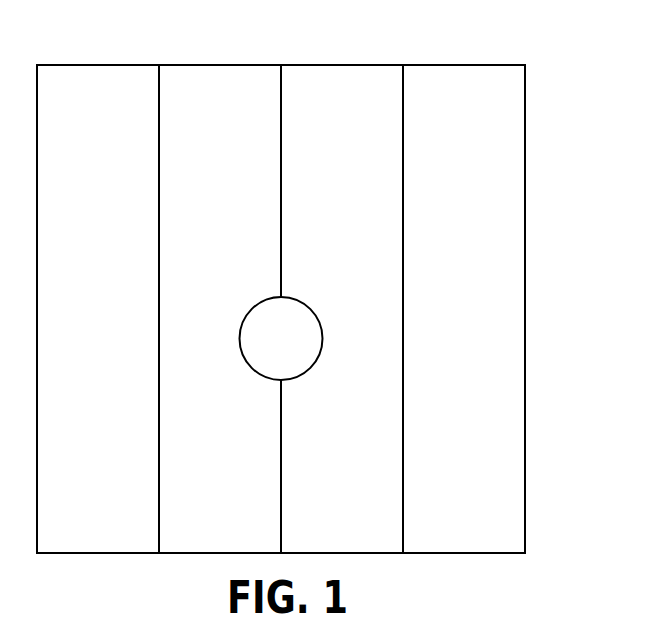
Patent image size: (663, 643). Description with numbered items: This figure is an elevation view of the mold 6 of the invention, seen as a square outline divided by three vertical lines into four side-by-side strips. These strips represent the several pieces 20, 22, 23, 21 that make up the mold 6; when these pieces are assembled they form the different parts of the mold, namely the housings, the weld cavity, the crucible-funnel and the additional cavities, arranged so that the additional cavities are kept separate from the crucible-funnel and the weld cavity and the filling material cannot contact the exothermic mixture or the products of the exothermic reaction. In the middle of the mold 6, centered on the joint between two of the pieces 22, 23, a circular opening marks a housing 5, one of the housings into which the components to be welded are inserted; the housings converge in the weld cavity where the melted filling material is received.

The housing 5 is at (297, 347).
The mold 6 is at (535, 159).
The piece 20 is at (97, 88).
The piece 21 is at (464, 85).
The piece 22 is at (223, 88).
The piece 23 is at (335, 85).